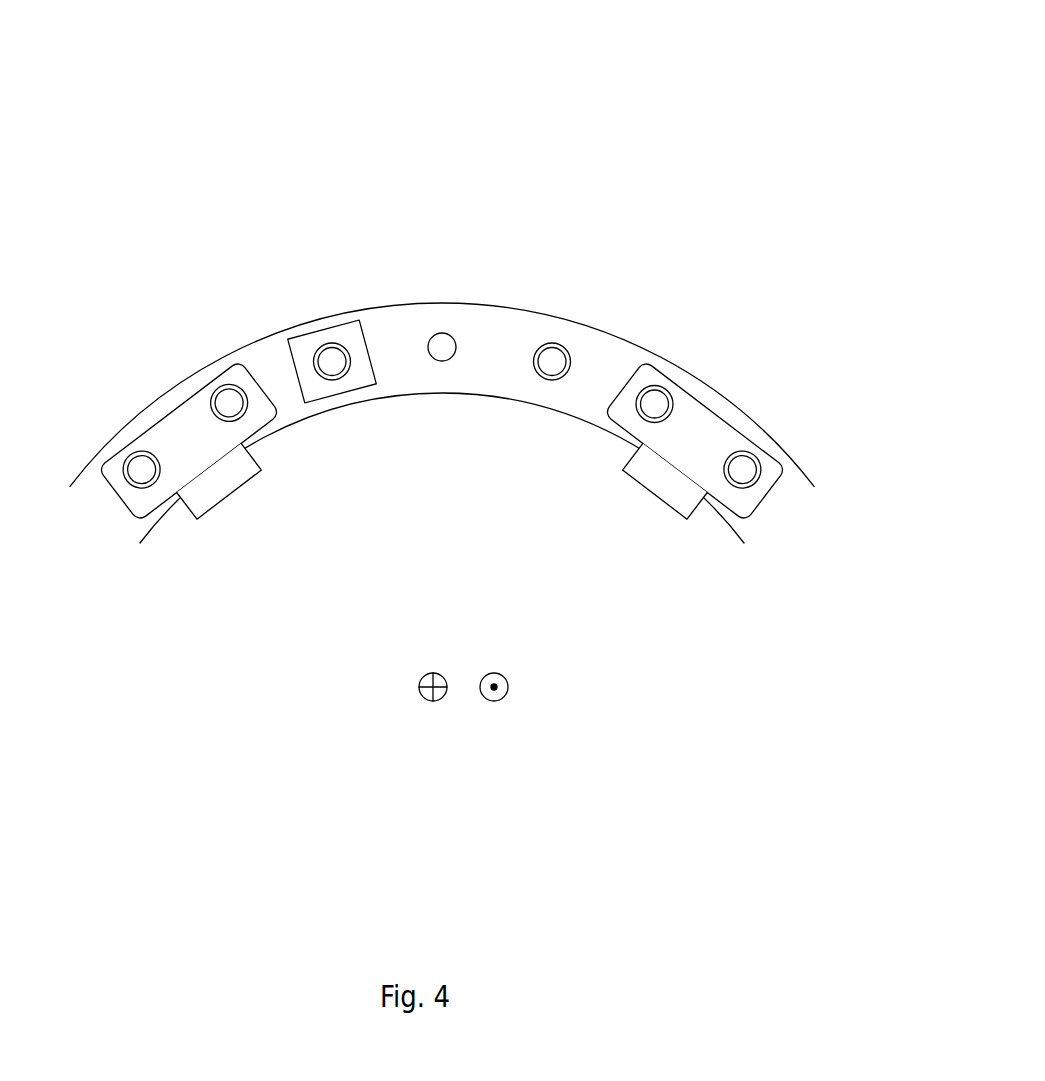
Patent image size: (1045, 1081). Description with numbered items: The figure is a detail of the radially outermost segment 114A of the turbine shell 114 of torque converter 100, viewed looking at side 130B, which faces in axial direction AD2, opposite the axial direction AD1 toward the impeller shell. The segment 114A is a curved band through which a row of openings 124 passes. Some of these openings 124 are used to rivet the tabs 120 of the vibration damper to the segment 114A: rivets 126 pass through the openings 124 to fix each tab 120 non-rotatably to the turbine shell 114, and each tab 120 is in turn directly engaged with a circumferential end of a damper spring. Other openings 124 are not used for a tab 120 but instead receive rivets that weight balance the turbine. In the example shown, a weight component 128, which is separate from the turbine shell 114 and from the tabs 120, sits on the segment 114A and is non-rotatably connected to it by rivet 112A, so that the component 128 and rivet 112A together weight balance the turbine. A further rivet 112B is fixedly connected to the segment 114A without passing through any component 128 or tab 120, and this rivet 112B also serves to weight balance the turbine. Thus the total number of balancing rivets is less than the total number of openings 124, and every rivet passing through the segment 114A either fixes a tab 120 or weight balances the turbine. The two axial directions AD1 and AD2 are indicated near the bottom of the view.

The torque converter 100 is at (680, 120).
The turbine shell 114 is at (480, 240).
The radially outermost segment 114A is at (386, 303).
The side 130B is at (508, 370).
The tab 120 is at (698, 442).
The rivet 126 is at (655, 386).
The weight component 128 is at (300, 338).
The rivet 112A is at (333, 343).
The rivet 112B is at (555, 343).
The opening 124 is at (440, 352).
The axial direction AD1 is at (426, 672).
The axial direction AD2 is at (487, 701).